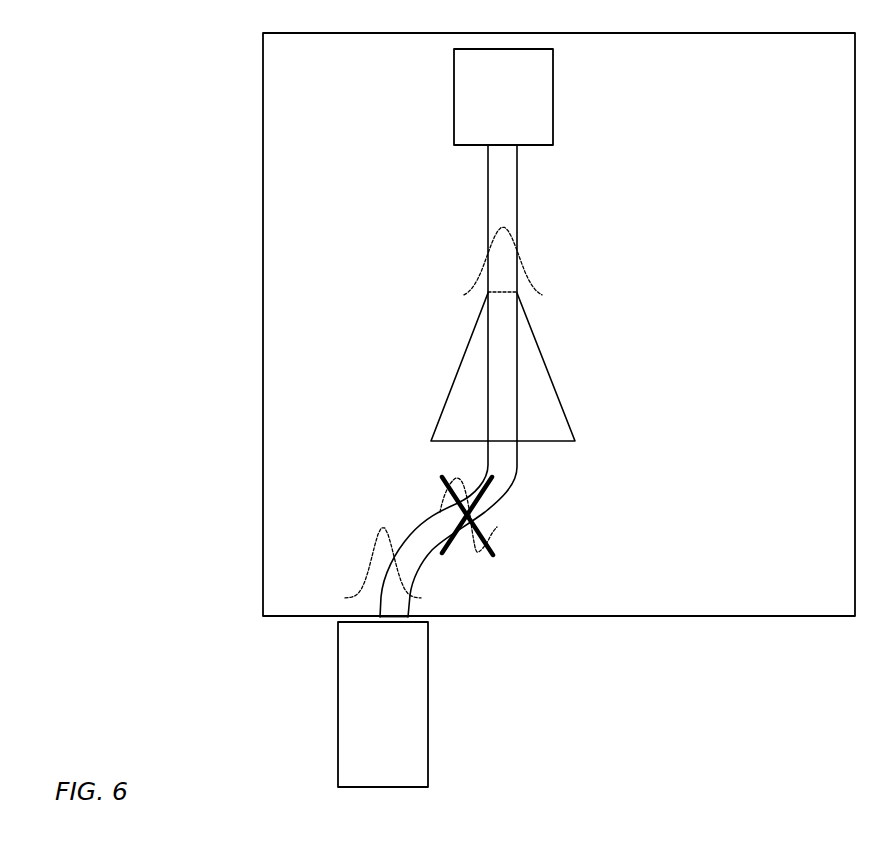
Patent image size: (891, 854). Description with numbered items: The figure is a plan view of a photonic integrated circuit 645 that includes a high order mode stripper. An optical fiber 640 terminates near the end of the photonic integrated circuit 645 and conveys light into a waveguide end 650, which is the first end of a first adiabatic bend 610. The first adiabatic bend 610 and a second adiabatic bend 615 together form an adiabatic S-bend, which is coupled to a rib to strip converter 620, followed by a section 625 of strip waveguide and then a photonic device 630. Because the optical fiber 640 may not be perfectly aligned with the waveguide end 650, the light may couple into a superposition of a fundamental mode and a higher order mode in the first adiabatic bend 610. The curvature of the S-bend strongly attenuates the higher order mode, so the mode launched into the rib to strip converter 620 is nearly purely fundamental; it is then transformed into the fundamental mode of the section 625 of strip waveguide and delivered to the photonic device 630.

The first adiabatic bend 610 is at (415, 535).
The second adiabatic bend 615 is at (507, 490).
The rib to strip converter 620 is at (550, 377).
The section of strip waveguide 625 is at (517, 211).
The photonic device 630 is at (553, 92).
The optical fiber 640 is at (428, 697).
The photonic integrated circuit 645 is at (658, 616).
The waveguide end 650 is at (396, 617).